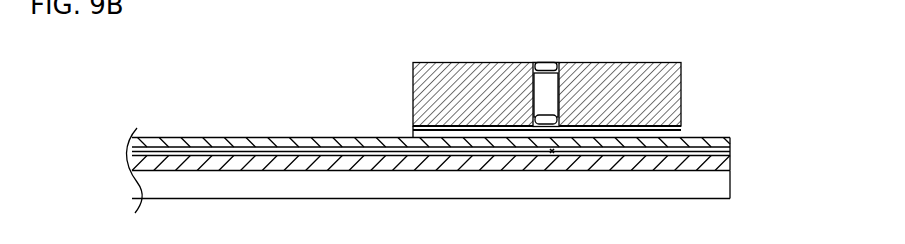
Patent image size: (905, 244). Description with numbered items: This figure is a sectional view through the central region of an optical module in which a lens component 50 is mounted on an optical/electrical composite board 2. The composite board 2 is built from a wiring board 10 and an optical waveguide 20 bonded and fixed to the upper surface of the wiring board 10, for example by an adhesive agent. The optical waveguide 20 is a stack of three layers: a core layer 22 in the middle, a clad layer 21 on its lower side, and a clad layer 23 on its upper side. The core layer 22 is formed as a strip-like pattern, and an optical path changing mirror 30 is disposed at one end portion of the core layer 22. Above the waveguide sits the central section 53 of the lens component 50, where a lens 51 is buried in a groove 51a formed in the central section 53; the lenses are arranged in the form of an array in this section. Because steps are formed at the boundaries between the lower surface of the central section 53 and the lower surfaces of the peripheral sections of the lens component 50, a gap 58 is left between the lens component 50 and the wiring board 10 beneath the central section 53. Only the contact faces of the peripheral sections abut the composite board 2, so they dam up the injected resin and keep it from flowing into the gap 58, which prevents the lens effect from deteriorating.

The optical/electrical composite board 2 is at (338, 204).
The wiring board 10 is at (429, 179).
The optical waveguide 20 is at (313, 40).
The clad layer 21 is at (262, 163).
The core layer 22 is at (243, 152).
The clad layer 23 is at (225, 141).
The optical path changing mirror 30 is at (553, 152).
The lens component 50 is at (640, 62).
The central section 53 is at (547, 95).
The lens 51 is at (542, 62).
The groove 51a is at (546, 112).
The gap 58 is at (679, 133).